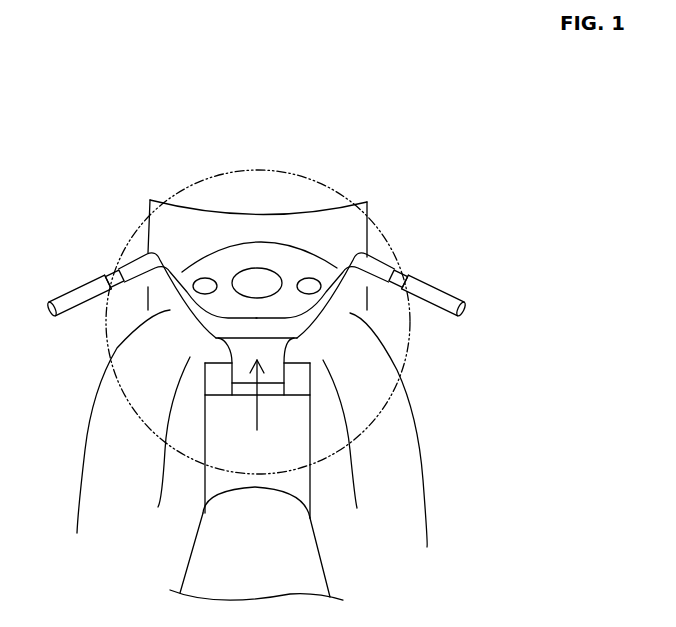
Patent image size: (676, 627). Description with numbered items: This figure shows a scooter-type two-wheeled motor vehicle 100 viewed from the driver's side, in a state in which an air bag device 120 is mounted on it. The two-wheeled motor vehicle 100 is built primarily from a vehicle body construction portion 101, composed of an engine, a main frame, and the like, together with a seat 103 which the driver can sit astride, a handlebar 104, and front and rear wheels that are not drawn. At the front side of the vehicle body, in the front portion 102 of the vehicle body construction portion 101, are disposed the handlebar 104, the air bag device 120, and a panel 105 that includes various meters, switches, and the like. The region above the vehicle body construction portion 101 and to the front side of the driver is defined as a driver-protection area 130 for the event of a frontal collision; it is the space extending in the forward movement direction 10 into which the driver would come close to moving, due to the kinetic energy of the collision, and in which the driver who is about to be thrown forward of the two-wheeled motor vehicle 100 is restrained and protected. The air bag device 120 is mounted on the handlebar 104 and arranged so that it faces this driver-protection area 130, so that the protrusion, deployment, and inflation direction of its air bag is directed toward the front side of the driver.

The forward movement direction 10 is at (258, 418).
The two-wheeled motor vehicle 100 is at (397, 213).
The vehicle body construction portion 101 is at (377, 518).
The front portion 102 is at (367, 365).
The seat 103 is at (323, 578).
The handlebar 104 is at (110, 273).
The panel 105 is at (205, 263).
The air bag device 120 is at (213, 352).
The driver-protection area 130 is at (187, 178).